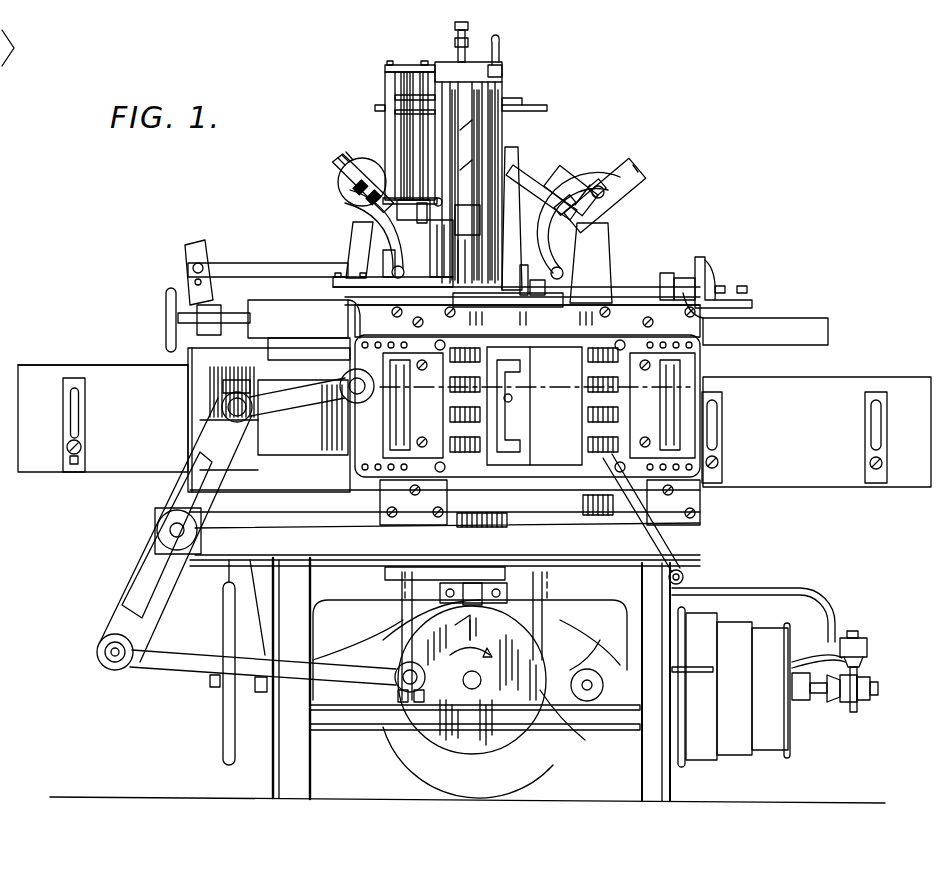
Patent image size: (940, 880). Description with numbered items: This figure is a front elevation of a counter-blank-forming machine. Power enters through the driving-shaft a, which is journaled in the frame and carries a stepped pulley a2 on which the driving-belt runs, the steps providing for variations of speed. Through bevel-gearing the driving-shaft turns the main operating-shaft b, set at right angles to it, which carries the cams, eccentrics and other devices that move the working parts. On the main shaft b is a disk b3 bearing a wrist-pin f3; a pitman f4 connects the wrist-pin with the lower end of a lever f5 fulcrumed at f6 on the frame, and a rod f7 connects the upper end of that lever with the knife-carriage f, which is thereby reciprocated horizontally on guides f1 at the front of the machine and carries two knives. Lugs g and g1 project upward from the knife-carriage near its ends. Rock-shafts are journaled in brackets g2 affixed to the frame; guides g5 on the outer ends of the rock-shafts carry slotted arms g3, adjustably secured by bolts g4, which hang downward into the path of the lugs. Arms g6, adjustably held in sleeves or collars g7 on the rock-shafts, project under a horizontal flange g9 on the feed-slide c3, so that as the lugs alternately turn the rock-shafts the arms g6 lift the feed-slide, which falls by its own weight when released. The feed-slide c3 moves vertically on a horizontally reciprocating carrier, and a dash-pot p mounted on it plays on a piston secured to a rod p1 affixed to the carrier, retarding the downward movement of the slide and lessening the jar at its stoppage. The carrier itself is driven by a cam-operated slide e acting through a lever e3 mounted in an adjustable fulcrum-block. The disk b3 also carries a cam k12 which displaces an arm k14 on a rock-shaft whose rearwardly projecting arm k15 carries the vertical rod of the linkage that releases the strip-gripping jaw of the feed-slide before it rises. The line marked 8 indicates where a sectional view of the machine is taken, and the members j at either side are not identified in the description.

The dash-pot p is at (397, 87).
The rod p1 is at (395, 210).
The feed-slide c3 is at (460, 88).
The lug g is at (382, 272).
The lug g1 is at (706, 265).
The brackets g2 is at (594, 258).
The slotted arms g3 is at (588, 240).
The bolts g4 is at (578, 203).
The guides g5 is at (605, 198).
The arms g6 is at (525, 165).
The guide sleeves or collars g7 is at (560, 205).
The horizontal flange g9 is at (512, 112).
The slide e is at (612, 665).
The lever e3 is at (205, 296).
The section line 8 is at (185, 361).
The table j is at (104, 458).
The knife-carriage f is at (372, 432).
The guides f1 is at (318, 342).
The wrist-pin f3 is at (418, 680).
The pitman f4 is at (188, 660).
The lever f5 is at (140, 592).
The fulcrum f6 is at (156, 530).
The rod f7 is at (304, 405).
The main operating-shaft b is at (483, 681).
The disk b3 is at (498, 735).
The cam k12 is at (555, 700).
The arm k14 is at (469, 630).
The arm k15 is at (475, 596).
The driving-shaft a is at (820, 690).
The stepped pulley a2 is at (734, 737).